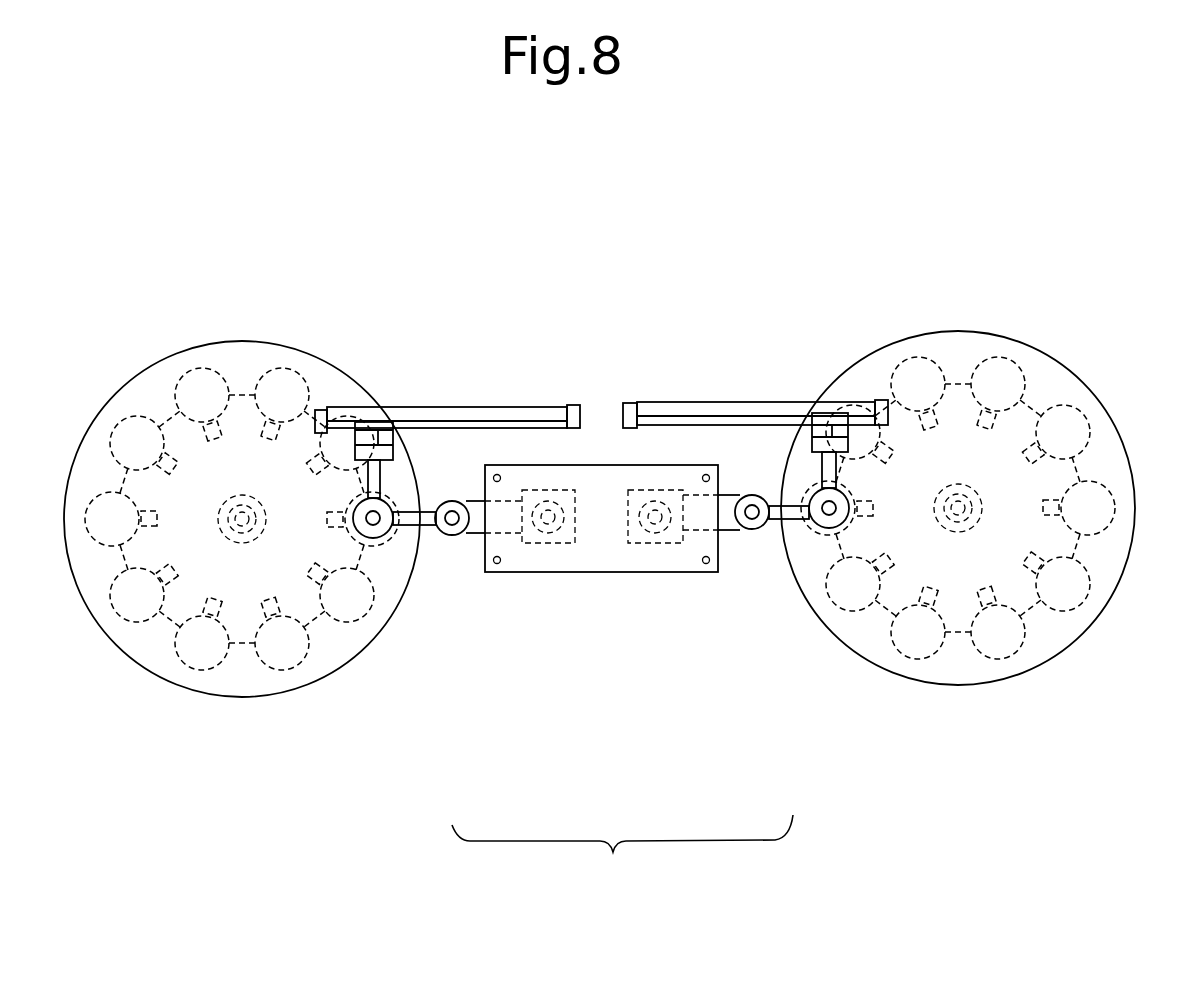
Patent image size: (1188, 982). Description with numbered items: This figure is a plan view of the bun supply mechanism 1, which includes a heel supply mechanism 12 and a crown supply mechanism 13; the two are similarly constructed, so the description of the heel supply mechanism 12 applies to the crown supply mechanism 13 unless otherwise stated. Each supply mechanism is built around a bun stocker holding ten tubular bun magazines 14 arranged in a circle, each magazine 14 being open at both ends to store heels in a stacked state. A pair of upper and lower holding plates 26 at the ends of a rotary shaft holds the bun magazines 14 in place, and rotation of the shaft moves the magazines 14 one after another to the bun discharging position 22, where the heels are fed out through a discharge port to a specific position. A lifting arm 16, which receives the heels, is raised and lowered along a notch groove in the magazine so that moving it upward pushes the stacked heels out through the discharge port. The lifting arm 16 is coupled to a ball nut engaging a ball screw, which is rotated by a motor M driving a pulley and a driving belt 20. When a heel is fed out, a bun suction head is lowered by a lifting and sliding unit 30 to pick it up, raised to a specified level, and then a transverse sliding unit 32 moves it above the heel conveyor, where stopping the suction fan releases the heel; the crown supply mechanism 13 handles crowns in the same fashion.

The bun supply mechanism 1 is at (622, 858).
The heel supply mechanism 12 is at (830, 692).
The crown supply mechanism 13 is at (430, 718).
The bun magazine 14 is at (188, 668).
The lifting arm 16 is at (793, 512).
The driving belt 20 is at (473, 538).
The bun discharging position 22 is at (400, 494).
The holding plates 26 is at (178, 407).
The lifting and sliding unit 30 is at (375, 528).
The transverse sliding unit 32 is at (653, 410).
The motor M is at (560, 545).